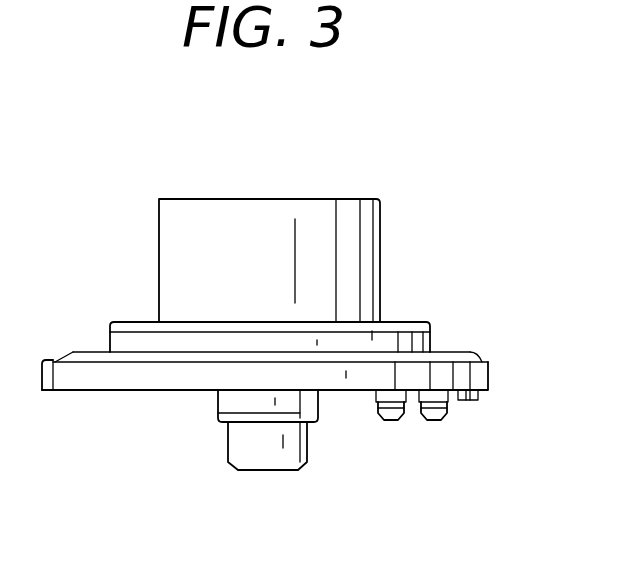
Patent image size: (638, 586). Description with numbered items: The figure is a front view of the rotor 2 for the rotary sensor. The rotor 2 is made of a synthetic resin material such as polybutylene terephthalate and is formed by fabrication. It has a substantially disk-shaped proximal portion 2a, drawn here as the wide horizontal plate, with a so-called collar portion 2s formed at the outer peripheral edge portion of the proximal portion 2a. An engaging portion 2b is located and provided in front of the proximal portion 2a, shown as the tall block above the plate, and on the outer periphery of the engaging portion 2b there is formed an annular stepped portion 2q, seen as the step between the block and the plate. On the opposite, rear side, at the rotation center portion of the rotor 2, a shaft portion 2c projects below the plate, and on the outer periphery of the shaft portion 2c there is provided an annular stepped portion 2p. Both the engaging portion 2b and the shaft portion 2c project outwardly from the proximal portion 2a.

The rotor 2 is at (392, 134).
The engaging portion 2b is at (381, 219).
The annular stepped portion 2q is at (143, 322).
The collar portion 2s is at (471, 377).
The proximal portion 2a is at (150, 375).
The annular stepped portion 2p is at (218, 424).
The shaft portion 2c is at (308, 442).